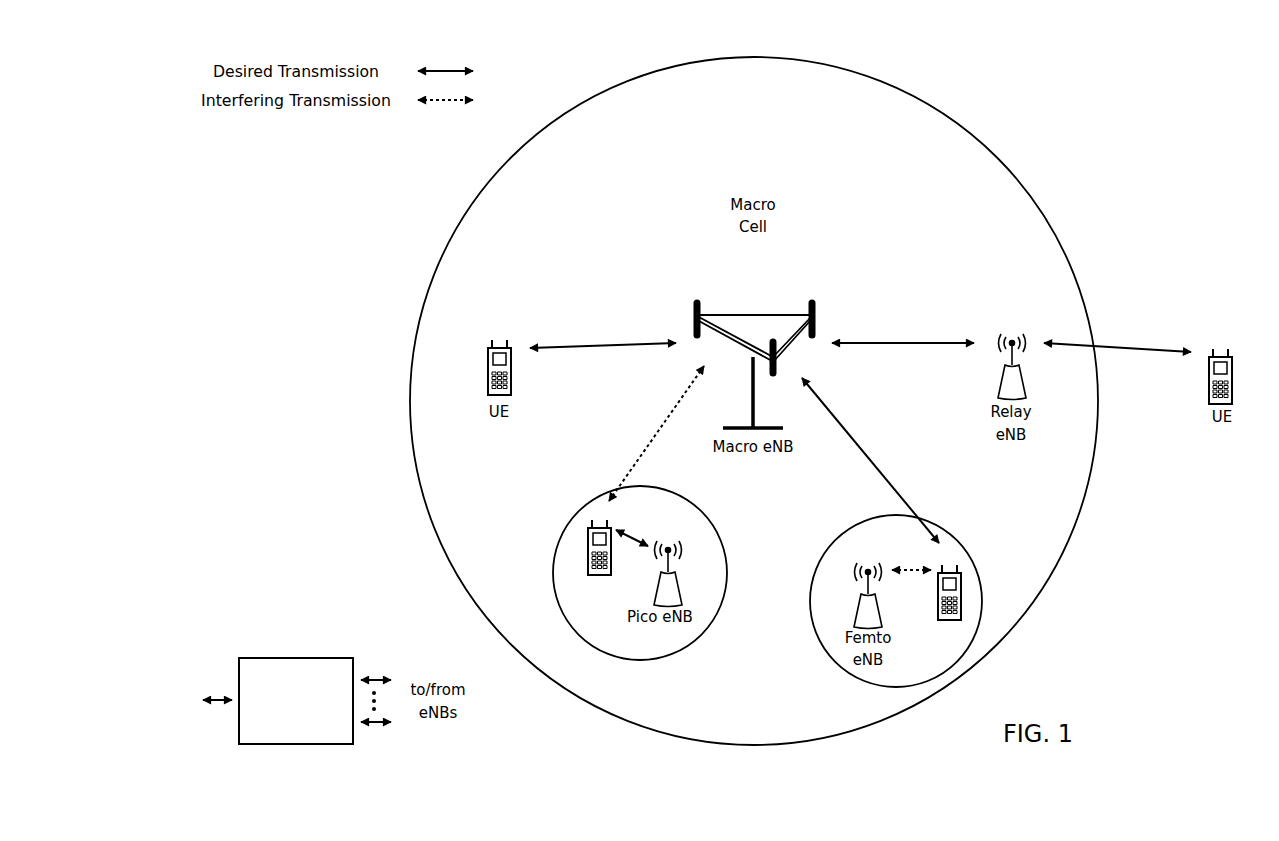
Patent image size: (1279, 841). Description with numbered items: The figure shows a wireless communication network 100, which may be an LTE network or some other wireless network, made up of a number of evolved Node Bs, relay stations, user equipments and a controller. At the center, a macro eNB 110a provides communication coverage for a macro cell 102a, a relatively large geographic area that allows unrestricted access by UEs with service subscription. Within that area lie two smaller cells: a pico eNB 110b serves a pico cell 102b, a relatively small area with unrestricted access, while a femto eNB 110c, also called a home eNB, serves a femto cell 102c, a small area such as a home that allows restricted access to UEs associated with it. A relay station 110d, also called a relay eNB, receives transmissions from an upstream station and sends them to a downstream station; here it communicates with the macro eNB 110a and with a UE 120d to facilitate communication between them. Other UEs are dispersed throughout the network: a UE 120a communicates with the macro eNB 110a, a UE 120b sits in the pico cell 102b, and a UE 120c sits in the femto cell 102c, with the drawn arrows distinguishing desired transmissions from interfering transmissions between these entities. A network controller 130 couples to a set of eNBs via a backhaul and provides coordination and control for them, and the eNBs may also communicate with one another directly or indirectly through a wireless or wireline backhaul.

The wireless communication network 100 is at (1160, 110).
The macro cell 102a is at (981, 142).
The pico cell 102b is at (699, 513).
The femto cell 102c is at (831, 546).
The macro eNB 110a is at (751, 313).
The pico eNB 110b is at (683, 594).
The femto eNB 110c is at (856, 614).
The relay station 110d is at (1013, 340).
The UE 120a is at (488, 356).
The UE 120b is at (588, 568).
The UE 120c is at (938, 612).
The UE 120d is at (1233, 368).
The network controller 130 is at (289, 658).